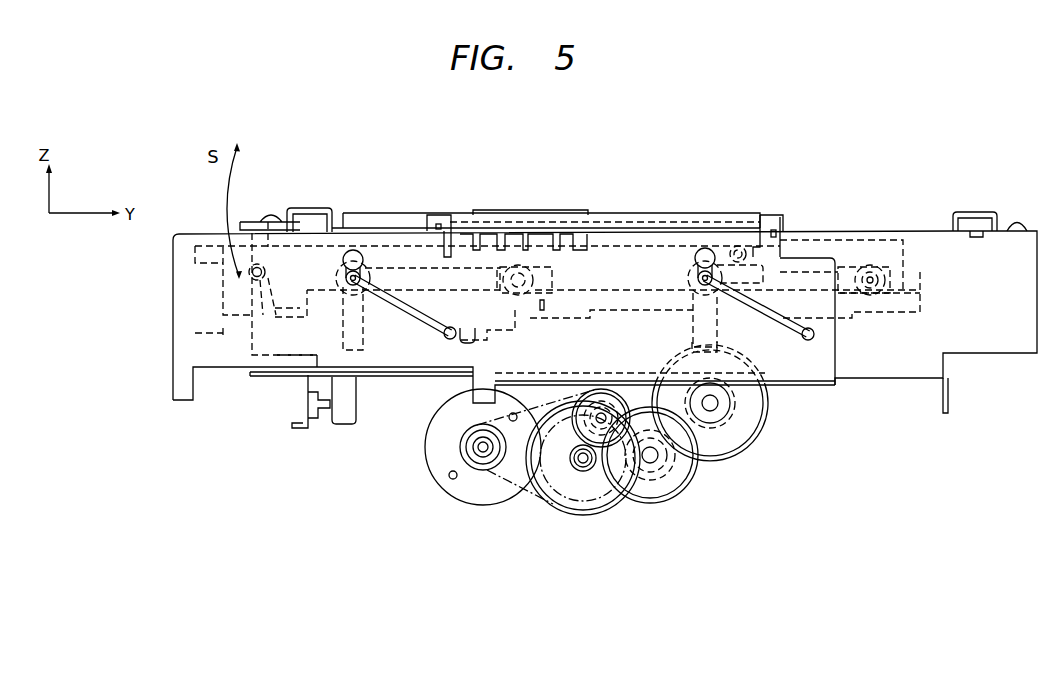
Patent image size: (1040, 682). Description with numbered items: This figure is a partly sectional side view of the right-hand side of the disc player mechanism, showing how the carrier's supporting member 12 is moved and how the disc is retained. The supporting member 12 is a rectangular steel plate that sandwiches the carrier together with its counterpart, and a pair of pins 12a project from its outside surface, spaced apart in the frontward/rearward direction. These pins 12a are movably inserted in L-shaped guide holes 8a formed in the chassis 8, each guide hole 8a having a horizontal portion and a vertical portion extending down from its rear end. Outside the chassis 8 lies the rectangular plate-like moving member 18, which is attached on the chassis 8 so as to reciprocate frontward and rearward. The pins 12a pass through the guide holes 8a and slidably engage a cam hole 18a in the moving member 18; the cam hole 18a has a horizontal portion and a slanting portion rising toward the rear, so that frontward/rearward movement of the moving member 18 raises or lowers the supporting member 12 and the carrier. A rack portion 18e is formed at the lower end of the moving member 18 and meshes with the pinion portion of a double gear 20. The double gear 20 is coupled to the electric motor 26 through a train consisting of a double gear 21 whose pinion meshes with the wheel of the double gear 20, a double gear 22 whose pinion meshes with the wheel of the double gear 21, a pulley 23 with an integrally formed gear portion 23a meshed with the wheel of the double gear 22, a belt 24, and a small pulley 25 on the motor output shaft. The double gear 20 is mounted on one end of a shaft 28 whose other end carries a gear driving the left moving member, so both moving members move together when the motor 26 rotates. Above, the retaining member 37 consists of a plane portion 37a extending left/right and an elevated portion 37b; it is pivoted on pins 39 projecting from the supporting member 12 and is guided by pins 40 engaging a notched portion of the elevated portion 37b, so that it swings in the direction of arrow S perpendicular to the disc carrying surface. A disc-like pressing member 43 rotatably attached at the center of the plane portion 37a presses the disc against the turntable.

The chassis 8 is at (884, 360).
The L-shaped guide hole 8a is at (393, 272).
The supporting member 12 is at (833, 243).
The pin 12a is at (355, 272).
The moving member 18 is at (229, 358).
The cam hole 18a is at (410, 328).
The rack portion 18e is at (787, 388).
The double gear 20 is at (744, 460).
The double gear 21 is at (666, 506).
The double gear 22 is at (565, 440).
The pulley 23 is at (607, 497).
The gear portion 23a is at (582, 466).
The belt 24 is at (513, 490).
The small pulley 25 is at (479, 462).
The electric motor 26 is at (443, 482).
The shaft 28 is at (710, 411).
The retaining member 37 is at (678, 211).
The plane portion 37a is at (627, 214).
The elevated portion 37b is at (314, 262).
The pin 39 is at (742, 250).
The pin 40 is at (259, 266).
The pressing member 43 is at (595, 222).